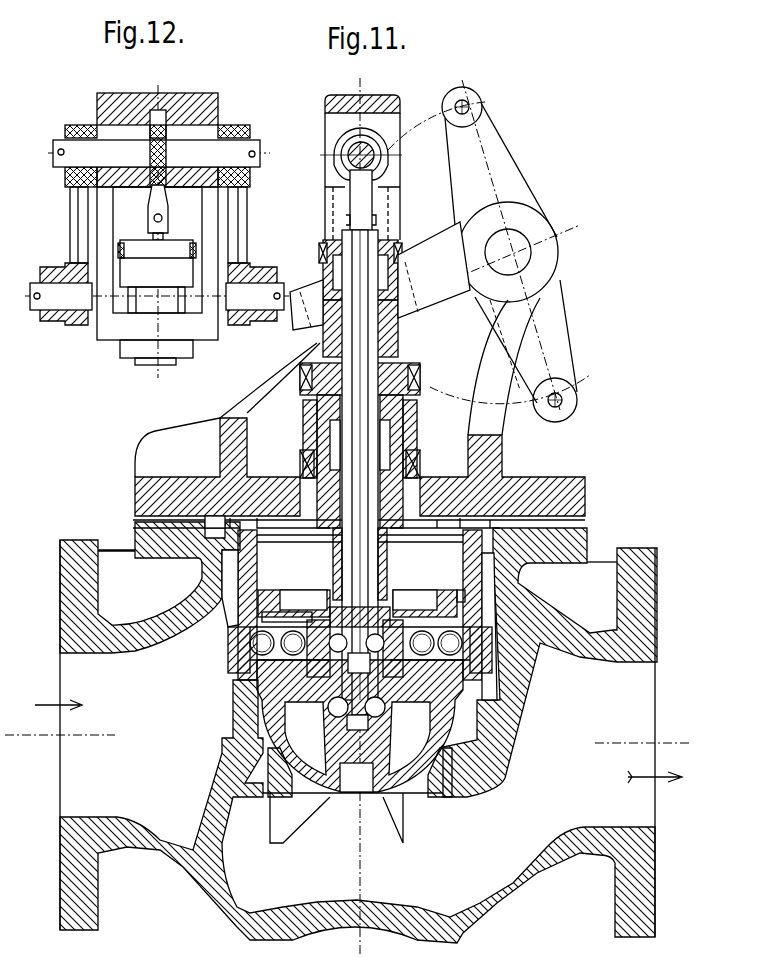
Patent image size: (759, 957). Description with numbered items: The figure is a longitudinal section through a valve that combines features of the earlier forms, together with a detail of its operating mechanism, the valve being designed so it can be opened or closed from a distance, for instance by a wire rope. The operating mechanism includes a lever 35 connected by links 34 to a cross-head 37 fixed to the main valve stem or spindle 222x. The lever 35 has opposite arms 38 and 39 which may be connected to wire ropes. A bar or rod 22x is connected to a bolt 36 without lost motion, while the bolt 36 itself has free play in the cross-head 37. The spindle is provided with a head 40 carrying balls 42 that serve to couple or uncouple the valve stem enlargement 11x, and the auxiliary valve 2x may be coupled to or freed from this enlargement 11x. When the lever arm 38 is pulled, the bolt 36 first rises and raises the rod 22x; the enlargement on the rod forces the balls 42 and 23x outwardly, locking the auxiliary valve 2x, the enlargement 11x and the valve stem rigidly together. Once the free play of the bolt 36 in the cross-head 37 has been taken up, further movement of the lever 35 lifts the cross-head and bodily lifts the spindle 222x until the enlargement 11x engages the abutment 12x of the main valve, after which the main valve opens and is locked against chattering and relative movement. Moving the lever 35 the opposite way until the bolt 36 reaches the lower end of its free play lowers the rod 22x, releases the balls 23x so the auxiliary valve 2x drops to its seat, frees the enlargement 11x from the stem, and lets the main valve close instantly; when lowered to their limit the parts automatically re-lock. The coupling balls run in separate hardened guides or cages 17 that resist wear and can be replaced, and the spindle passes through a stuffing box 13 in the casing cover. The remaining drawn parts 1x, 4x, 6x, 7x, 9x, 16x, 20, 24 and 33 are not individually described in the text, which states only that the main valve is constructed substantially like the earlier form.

In FIG. 11, the valve body 1x is at (275, 716).
In FIG. 11, the auxiliary valve 2x is at (350, 795).
In FIG. 11, the disc cage 4x is at (360, 604).
In FIG. 11, the seat ring 6x is at (228, 660).
In FIG. 11, the balls 7x is at (293, 640).
In FIG. 11, the seat 9x is at (236, 628).
In FIG. 11, the valve stem enlargement 11x is at (318, 625).
In FIG. 11, the abutment 12x is at (291, 606).
In FIG. 11, the stuffing box 13 is at (323, 440).
In FIG. 11, the bonnet 16x is at (500, 465).
In FIG. 11, the ball cages 17 is at (282, 595).
In FIG. 12, the stem head 20 is at (154, 218).
In FIG. 11, the rod 22x is at (362, 200).
In FIG. 12, the spindle 222x is at (148, 365).
In FIG. 11, the spindle 222x is at (372, 447).
In FIG. 11, the balls 23x is at (360, 726).
In FIG. 11, the key 24 is at (460, 596).
In FIG. 12, the cross head 33 is at (157, 276).
In FIG. 12, the links 34 is at (78, 240).
In FIG. 12, the lever 35 is at (55, 322).
In FIG. 11, the lever 35 is at (380, 276).
In FIG. 12, the bolt 36 is at (156, 153).
In FIG. 11, the bolt 36 is at (347, 160).
In FIG. 12, the cross-head 37 is at (150, 93).
In FIG. 11, the cross-head 37 is at (396, 97).
In FIG. 11, the lever arm 38 is at (492, 153).
In FIG. 11, the lever arm 39 is at (548, 350).
In FIG. 11, the head 40 is at (380, 600).
In FIG. 11, the balls 42 is at (357, 653).